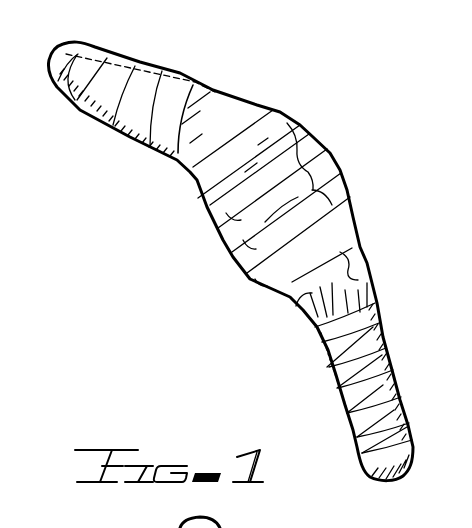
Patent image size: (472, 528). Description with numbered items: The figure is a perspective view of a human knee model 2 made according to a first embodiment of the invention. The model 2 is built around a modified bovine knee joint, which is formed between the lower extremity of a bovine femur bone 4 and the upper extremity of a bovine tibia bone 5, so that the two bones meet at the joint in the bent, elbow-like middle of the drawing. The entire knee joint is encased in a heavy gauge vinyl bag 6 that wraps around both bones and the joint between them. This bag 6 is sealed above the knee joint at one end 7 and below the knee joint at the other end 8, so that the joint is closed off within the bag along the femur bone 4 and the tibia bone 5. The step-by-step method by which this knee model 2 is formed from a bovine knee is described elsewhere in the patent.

The human knee model 2 is at (337, 158).
The bovine femur bone 4 is at (257, 113).
The bovine tibia bone 5 is at (355, 285).
The heavy gauge vinyl bag 6 is at (308, 143).
The end 7 is at (113, 56).
The end 8 is at (412, 432).